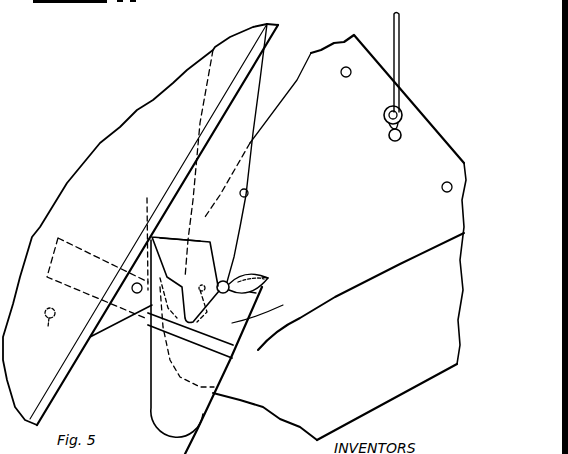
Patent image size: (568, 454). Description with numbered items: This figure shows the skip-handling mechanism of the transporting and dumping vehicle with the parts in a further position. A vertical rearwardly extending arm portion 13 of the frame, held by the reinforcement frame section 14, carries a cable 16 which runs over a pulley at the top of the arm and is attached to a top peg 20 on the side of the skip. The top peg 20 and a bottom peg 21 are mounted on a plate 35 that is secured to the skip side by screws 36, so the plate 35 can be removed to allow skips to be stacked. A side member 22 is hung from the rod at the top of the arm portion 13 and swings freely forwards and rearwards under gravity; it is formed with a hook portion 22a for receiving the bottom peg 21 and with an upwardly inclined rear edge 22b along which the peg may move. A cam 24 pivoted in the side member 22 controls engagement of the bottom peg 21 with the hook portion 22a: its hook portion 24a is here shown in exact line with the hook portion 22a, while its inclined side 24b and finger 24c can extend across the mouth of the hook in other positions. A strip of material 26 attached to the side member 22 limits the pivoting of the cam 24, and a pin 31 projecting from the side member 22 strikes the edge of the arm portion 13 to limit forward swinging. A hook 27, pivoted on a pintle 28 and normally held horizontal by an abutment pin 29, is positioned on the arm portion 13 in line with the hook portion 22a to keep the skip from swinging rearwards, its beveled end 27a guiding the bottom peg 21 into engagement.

The arm portion 13 is at (173, 92).
The reinforcement frame section 14 is at (424, 376).
The cable 16 is at (399, 50).
The top peg 20 is at (389, 136).
The bottom peg 21 is at (229, 283).
The side member 22 is at (255, 82).
The hook portion 22a is at (240, 280).
The upwardly inclined rear edge 22b is at (216, 389).
The cam 24 is at (193, 250).
The hook portion 24a is at (256, 293).
The inclined side 24b is at (179, 237).
The finger 24c is at (268, 278).
The strip of material 26 is at (232, 358).
The hook 27 is at (78, 248).
The beveled end 27a is at (235, 322).
The pintle 28 is at (131, 286).
The abutment pin 29 is at (42, 329).
The pin 31 is at (248, 193).
The plate 35 is at (381, 266).
The screw 36 is at (341, 75).